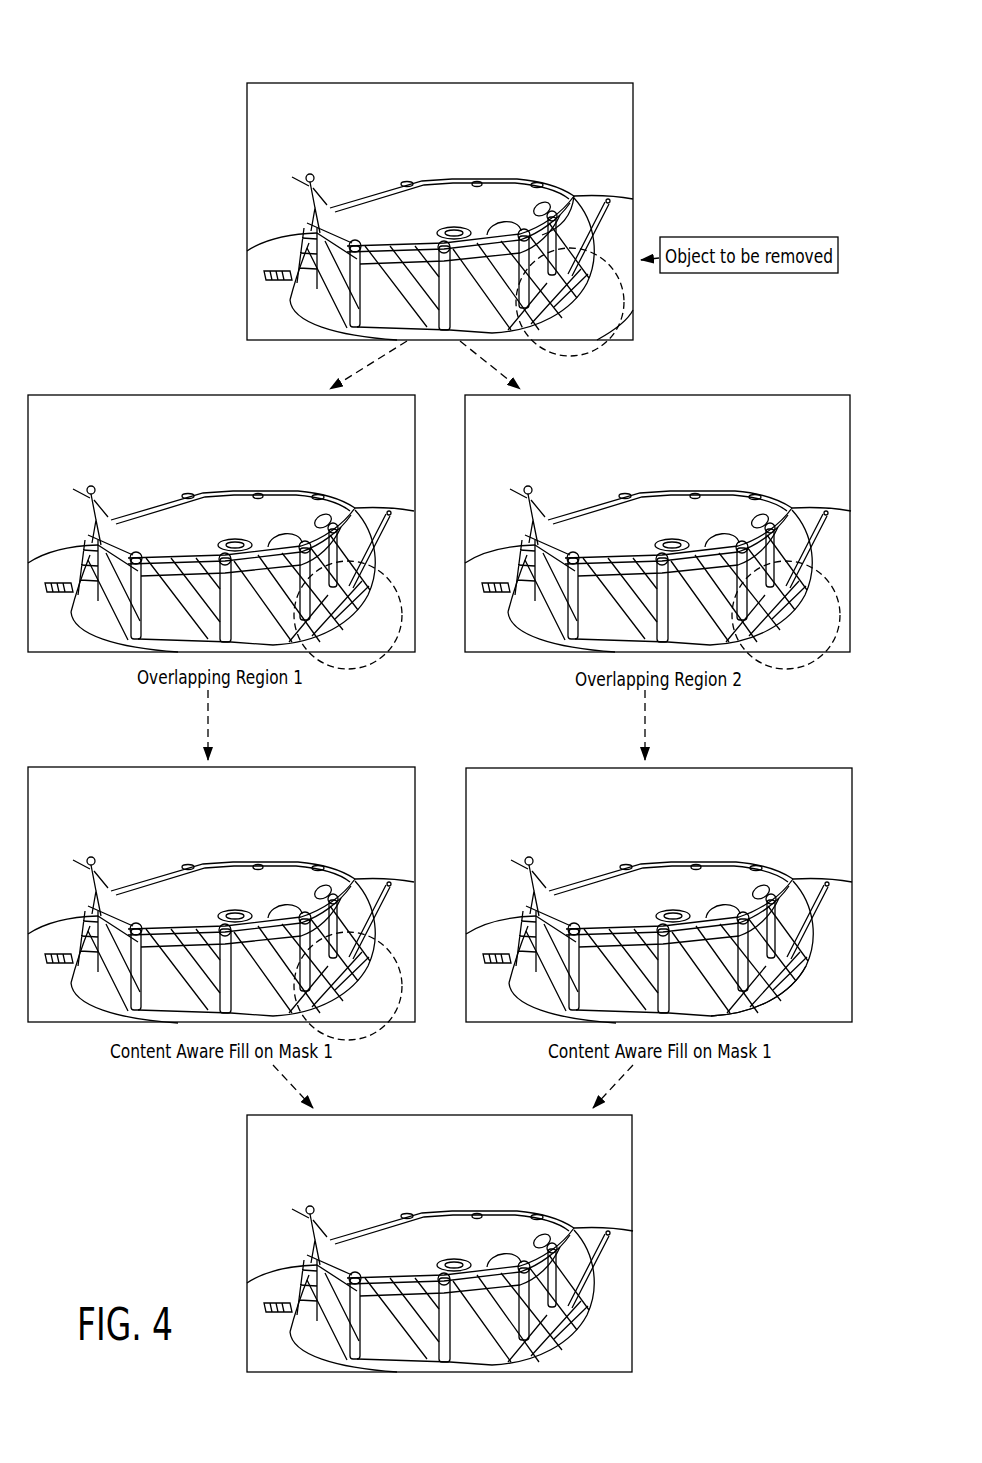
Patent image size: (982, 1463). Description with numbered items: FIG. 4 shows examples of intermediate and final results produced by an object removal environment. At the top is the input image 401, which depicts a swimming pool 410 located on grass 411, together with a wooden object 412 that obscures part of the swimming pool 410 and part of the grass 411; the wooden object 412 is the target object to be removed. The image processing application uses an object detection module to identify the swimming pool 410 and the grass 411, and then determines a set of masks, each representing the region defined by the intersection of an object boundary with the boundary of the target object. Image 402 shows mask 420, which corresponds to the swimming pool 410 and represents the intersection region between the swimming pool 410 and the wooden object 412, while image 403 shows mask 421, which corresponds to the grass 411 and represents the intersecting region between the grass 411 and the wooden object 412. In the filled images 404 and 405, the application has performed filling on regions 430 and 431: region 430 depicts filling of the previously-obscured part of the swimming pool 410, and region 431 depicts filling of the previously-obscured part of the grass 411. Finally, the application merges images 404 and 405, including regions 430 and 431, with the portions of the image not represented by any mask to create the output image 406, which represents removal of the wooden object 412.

The input image 401 is at (272, 80).
The intersecting region image 402 is at (55, 388).
The intersecting region image 403 is at (823, 388).
The filled image 404 is at (55, 760).
The filled image 405 is at (823, 760).
The output image 406 is at (240, 1194).
The swimming pool 410 is at (575, 193).
The grass 411 is at (602, 223).
The wooden object 412 is at (624, 327).
The mask 420 is at (365, 596).
The mask 421 is at (789, 639).
The region 430 is at (349, 984).
The region 431 is at (775, 1000).